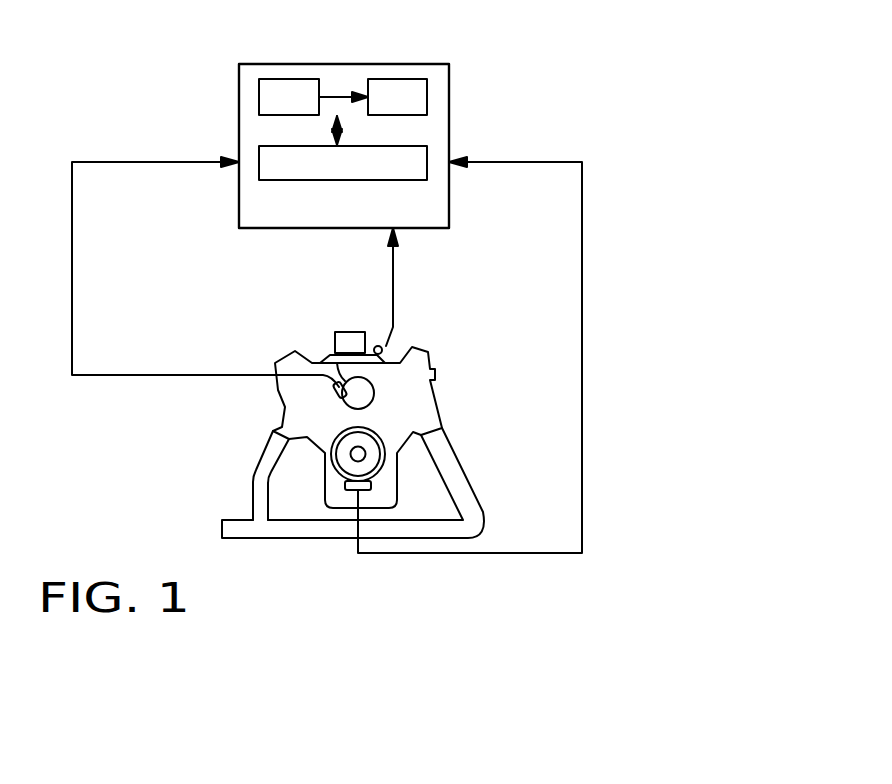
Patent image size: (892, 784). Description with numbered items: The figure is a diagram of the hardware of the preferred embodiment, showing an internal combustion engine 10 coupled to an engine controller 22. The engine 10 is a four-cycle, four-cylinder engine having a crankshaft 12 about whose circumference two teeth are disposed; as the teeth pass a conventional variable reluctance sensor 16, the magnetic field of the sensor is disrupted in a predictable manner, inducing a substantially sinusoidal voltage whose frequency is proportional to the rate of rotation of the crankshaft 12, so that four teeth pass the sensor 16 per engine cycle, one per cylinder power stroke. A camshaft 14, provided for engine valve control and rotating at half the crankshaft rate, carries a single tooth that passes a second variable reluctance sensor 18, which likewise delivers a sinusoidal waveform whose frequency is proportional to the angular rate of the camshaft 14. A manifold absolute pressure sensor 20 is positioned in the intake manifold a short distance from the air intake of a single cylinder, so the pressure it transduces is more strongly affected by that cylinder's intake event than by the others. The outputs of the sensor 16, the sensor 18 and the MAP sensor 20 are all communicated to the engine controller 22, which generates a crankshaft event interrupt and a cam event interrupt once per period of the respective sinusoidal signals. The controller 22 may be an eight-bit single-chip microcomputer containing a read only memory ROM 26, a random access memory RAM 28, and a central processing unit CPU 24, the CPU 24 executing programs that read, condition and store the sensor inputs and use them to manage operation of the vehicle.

The internal combustion engine 10 is at (460, 389).
The crankshaft 12 is at (341, 460).
The camshaft 14 is at (362, 395).
The variable reluctance sensor 16 is at (340, 503).
The variable reluctance sensor 18 is at (316, 362).
The manifold absolute pressure MAP sensor 20 is at (385, 347).
The engine controller 22 is at (366, 57).
The central processing unit CPU 24 is at (262, 170).
The read only memory ROM 26 is at (259, 100).
The random access memory RAM 28 is at (427, 92).